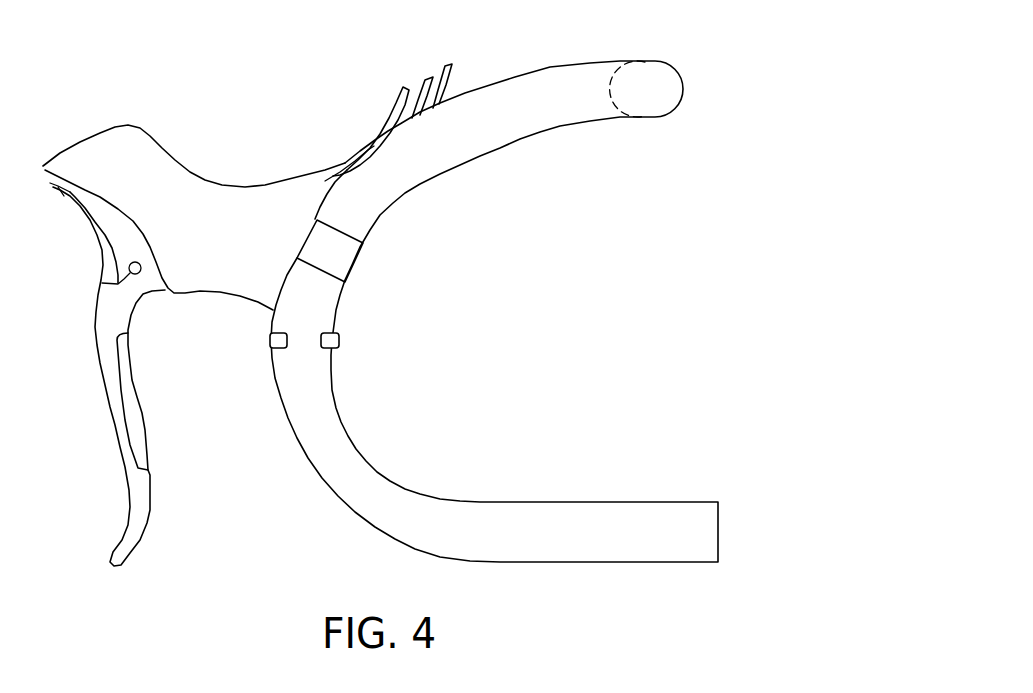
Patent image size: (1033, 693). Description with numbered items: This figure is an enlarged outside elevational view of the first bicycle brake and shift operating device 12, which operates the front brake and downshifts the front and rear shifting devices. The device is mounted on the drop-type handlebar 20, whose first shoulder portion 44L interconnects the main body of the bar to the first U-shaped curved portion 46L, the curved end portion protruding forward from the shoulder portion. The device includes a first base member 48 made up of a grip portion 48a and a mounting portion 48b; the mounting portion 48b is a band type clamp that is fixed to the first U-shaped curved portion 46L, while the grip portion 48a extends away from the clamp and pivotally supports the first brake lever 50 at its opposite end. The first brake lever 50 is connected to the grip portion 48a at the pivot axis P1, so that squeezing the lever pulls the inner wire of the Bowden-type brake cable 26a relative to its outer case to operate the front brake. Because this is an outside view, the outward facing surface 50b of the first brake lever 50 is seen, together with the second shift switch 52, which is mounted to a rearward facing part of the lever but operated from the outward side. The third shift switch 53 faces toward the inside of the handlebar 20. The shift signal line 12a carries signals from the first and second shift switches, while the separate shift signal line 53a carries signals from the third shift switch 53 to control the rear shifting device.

The first bicycle brake and shift operating device 12 is at (197, 192).
The shift signal line 12a is at (427, 88).
The handlebar 20 is at (555, 134).
The brake cable 26a is at (395, 112).
The first shoulder portion 44L is at (683, 79).
The first U-shaped curved portion 46L is at (398, 467).
The first base member 48 is at (295, 170).
The grip portion 48a is at (260, 184).
The mounting portion 48b is at (330, 227).
The first brake lever 50 is at (107, 376).
The outward facing surface 50b is at (108, 316).
The second shift switch 52 is at (128, 382).
The third shift switch 53 is at (340, 339).
The shift signal line 53a is at (453, 73).
The pivot axis P1 is at (129, 267).